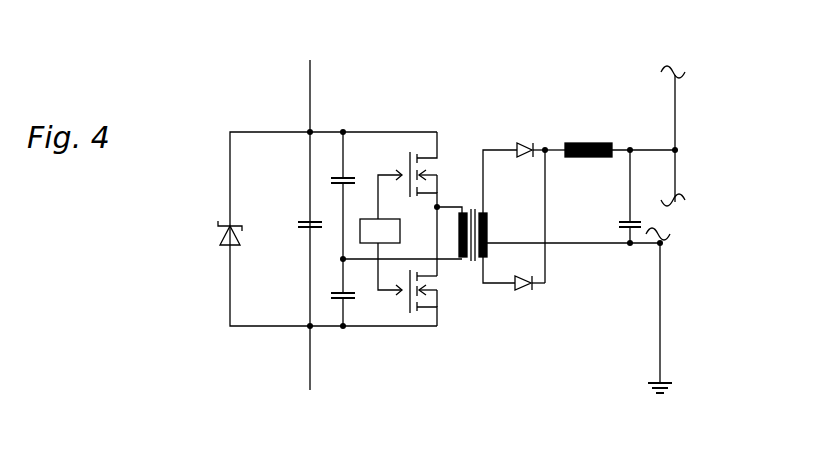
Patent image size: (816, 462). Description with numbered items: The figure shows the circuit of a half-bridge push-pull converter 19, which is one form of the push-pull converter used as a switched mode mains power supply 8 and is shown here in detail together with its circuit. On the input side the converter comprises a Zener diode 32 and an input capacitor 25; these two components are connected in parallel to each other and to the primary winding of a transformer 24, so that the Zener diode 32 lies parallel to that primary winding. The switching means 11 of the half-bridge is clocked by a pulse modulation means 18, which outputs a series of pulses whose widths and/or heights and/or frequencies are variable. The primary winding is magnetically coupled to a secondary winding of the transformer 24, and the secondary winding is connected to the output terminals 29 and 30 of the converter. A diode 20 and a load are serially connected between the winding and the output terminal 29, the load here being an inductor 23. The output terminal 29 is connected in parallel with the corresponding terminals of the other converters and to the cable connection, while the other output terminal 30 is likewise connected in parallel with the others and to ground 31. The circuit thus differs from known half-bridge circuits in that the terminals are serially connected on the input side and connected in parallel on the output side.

The switched mode mains power supply 8 is at (528, 86).
The half-bridge push-pull converter 19 is at (451, 226).
The switching means 11 is at (410, 328).
The pulse modulation means 18 is at (371, 245).
The diode 20 is at (528, 292).
The inductor 23 is at (578, 143).
The transformer 24 is at (467, 212).
The input capacitor 25 is at (294, 224).
The output terminal 29 is at (679, 148).
The output terminal 30 is at (664, 240).
The ground 31 is at (665, 382).
The Zener diode 32 is at (217, 240).